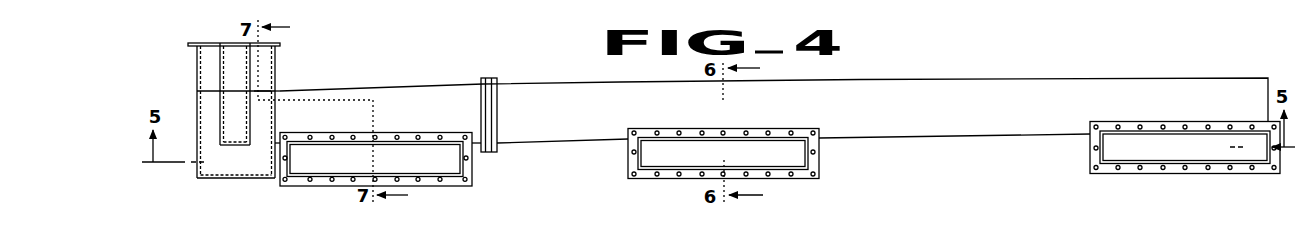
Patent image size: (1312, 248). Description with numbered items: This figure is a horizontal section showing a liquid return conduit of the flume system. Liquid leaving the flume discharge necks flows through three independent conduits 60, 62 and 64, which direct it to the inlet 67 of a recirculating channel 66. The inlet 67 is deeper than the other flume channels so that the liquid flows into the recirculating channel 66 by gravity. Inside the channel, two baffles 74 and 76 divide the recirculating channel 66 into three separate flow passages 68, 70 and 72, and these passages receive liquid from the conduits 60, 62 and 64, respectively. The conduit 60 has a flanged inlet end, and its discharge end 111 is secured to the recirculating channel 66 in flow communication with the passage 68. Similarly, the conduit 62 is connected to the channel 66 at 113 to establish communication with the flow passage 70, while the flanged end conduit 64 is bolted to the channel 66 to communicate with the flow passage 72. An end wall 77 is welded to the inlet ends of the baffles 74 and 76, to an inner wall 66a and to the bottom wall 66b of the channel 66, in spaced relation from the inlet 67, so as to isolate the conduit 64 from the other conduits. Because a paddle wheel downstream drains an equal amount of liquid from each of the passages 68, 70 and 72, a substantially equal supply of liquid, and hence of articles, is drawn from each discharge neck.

The conduit 60 is at (918, 117).
The conduit 62 is at (640, 163).
The conduit 64 is at (280, 163).
The recirculating channel 66 is at (223, 116).
The inner wall 66a is at (273, 82).
The bottom wall 66b is at (210, 100).
The inlet 67 is at (212, 178).
The flow passage 68 is at (267, 62).
The flow passage 70 is at (227, 134).
The flow passage 72 is at (215, 43).
The baffle 74 is at (247, 128).
The baffle 76 is at (222, 137).
The end wall 77 is at (227, 147).
The discharge end 111 is at (292, 112).
The connection point 113 is at (237, 143).